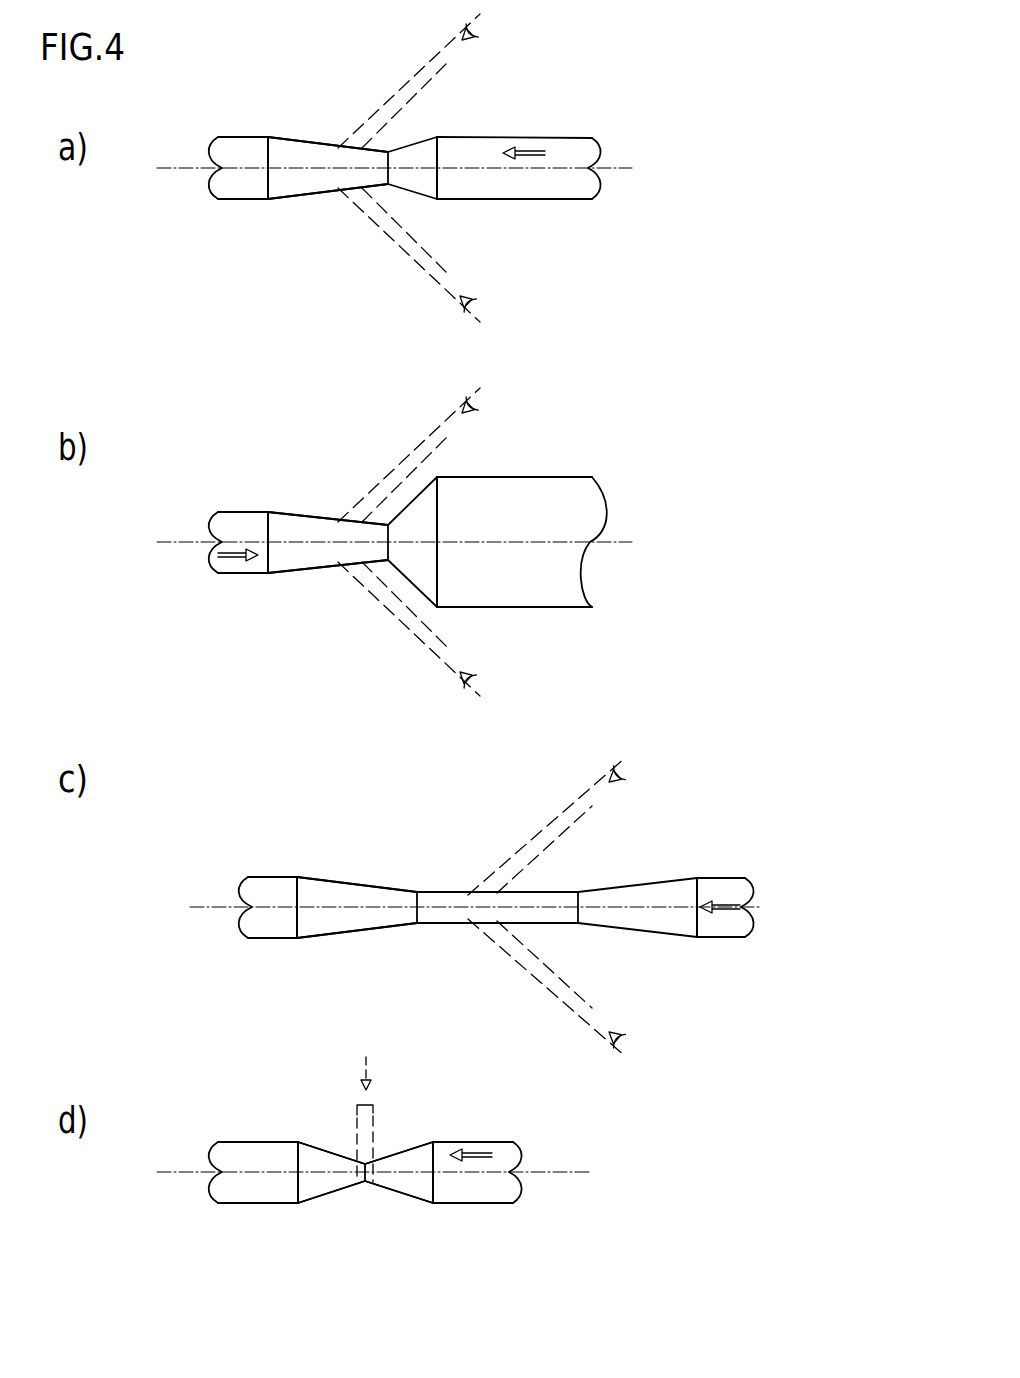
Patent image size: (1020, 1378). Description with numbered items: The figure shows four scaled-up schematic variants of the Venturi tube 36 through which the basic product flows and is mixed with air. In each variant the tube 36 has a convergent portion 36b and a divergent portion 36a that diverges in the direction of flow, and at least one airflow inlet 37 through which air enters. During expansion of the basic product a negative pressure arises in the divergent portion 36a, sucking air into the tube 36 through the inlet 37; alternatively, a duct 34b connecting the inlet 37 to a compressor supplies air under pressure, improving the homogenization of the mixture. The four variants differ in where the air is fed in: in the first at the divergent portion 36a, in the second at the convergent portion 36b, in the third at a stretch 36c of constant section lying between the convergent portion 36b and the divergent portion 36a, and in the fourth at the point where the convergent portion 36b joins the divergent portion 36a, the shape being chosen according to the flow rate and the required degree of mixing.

In FIG. 4a, the duct 34b is at (429, 68).
In FIG. 4b, the duct 34b is at (429, 441).
In FIG. 4c, the duct 34b is at (573, 805).
In FIG. 4d, the duct 34b is at (352, 1113).
In FIG. 4a, the Venturi tube 36 is at (298, 112).
In FIG. 4b, the Venturi tube 36 is at (298, 486).
In FIG. 4c, the Venturi tube 36 is at (328, 852).
In FIG. 4d, the Venturi tube 36 is at (210, 1110).
In FIG. 4a, the divergent portion 36a is at (277, 147).
In FIG. 4b, the divergent portion 36a is at (425, 513).
In FIG. 4c, the divergent portion 36a is at (307, 892).
In FIG. 4d, the divergent portion 36a is at (317, 1177).
In FIG. 4a, the convergent portion 36b is at (427, 182).
In FIG. 4b, the convergent portion 36b is at (277, 527).
In FIG. 4c, the convergent portion 36b is at (687, 925).
In FIG. 4d, the convergent portion 36b is at (420, 1160).
In FIG. 4c, the stretch with a constant section 36c is at (557, 897).
In FIG. 4a, the airflow inlet 37 is at (347, 150).
In FIG. 4b, the airflow inlet 37 is at (347, 525).
In FIG. 4c, the airflow inlet 37 is at (480, 895).
In FIG. 4d, the airflow inlet 37 is at (362, 1165).